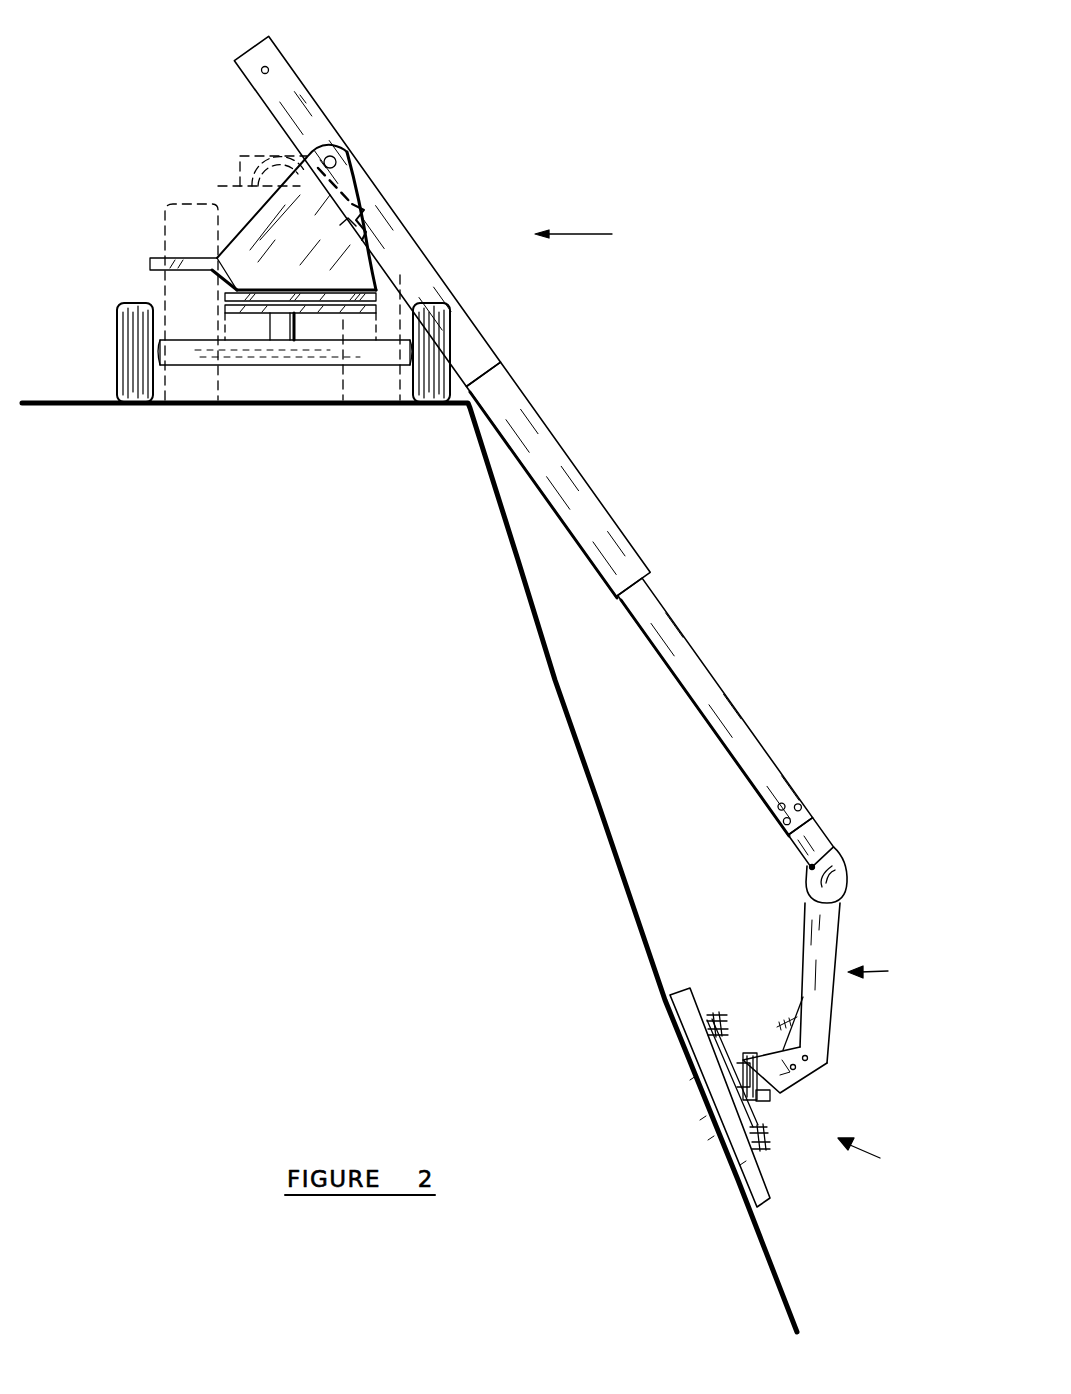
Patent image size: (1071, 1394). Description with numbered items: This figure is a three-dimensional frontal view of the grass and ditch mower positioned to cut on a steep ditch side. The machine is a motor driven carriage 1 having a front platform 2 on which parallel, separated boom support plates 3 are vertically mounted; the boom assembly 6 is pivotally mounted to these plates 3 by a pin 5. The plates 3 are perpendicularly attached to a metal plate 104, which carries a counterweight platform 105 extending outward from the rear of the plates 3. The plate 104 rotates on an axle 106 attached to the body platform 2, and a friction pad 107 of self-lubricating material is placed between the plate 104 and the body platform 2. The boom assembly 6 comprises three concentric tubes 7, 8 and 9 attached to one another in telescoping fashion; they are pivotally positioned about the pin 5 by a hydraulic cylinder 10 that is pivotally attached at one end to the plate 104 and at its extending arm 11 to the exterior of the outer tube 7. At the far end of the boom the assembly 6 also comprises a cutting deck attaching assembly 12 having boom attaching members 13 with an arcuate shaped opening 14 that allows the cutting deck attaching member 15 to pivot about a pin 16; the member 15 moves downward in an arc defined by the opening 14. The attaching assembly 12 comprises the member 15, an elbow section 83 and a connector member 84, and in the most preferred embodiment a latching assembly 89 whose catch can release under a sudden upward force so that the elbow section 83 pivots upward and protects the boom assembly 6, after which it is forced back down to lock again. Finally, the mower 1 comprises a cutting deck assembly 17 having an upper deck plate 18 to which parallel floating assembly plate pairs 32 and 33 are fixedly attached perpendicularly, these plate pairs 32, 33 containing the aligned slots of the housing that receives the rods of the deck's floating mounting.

The motor driven carriage 1 is at (228, 160).
The front platform 2 is at (352, 312).
The boom support plates 3 is at (247, 247).
The pin 5 is at (337, 161).
The boom assembly 6 is at (582, 236).
The outer tube 7 is at (498, 358).
The tube 8 is at (603, 515).
The tube 9 is at (718, 688).
The hydraulic cylinder 10 is at (323, 203).
The extending arm 11 is at (345, 229).
The cutting deck attaching assembly 12 is at (882, 973).
The boom attaching members 13 is at (822, 840).
The arcuate shaped opening 14 is at (835, 885).
The cutting deck attaching member 15 is at (813, 980).
The pin 16 is at (810, 868).
The cutting deck assembly 17 is at (871, 1156).
The upper deck plate 18 is at (770, 1187).
The floating assembly plate pair 32 is at (768, 1142).
The floating assembly plate pair 33 is at (722, 1015).
The elbow section 83 is at (810, 1068).
The connector member 84 is at (750, 1053).
The latching assembly 89 is at (767, 1093).
The metal plate 104 is at (377, 294).
The counterweight platform 105 is at (167, 247).
The axle 106 is at (283, 338).
The friction pad 107 is at (227, 306).